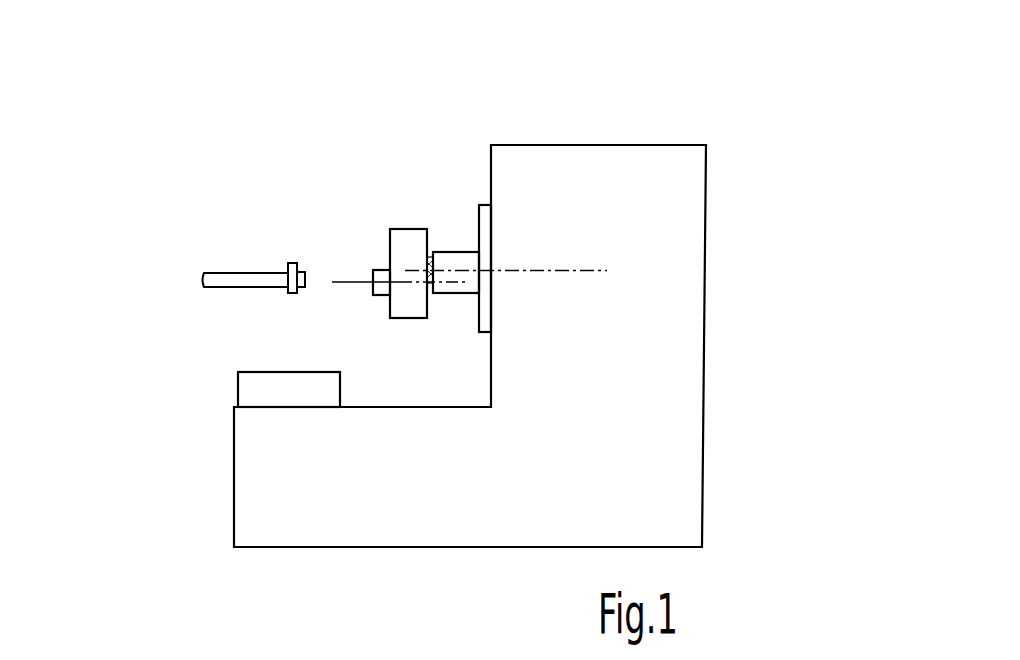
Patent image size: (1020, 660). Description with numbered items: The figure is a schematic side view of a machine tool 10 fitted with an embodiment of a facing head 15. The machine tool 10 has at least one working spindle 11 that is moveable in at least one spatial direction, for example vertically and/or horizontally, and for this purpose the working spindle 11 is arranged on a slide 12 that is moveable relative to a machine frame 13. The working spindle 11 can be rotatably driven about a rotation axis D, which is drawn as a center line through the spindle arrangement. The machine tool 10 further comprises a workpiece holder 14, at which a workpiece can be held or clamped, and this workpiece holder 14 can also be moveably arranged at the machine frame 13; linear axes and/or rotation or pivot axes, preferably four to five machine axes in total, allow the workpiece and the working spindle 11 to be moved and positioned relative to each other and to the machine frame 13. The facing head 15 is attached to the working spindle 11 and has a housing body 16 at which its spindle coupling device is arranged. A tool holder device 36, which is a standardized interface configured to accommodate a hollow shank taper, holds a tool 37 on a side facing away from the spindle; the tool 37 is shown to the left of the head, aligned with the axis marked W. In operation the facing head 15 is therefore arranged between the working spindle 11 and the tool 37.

The machine tool 10 is at (440, 156).
The working spindle 11 is at (453, 243).
The slide 12 is at (478, 315).
The machine frame 13 is at (677, 428).
The workpiece holder 14 is at (270, 372).
The facing head 15 is at (371, 222).
The housing body 16 is at (408, 228).
The tool holder device 36 is at (372, 295).
The tool 37 is at (235, 265).
The workpiece axis W is at (343, 282).
The rotation axis D is at (567, 270).